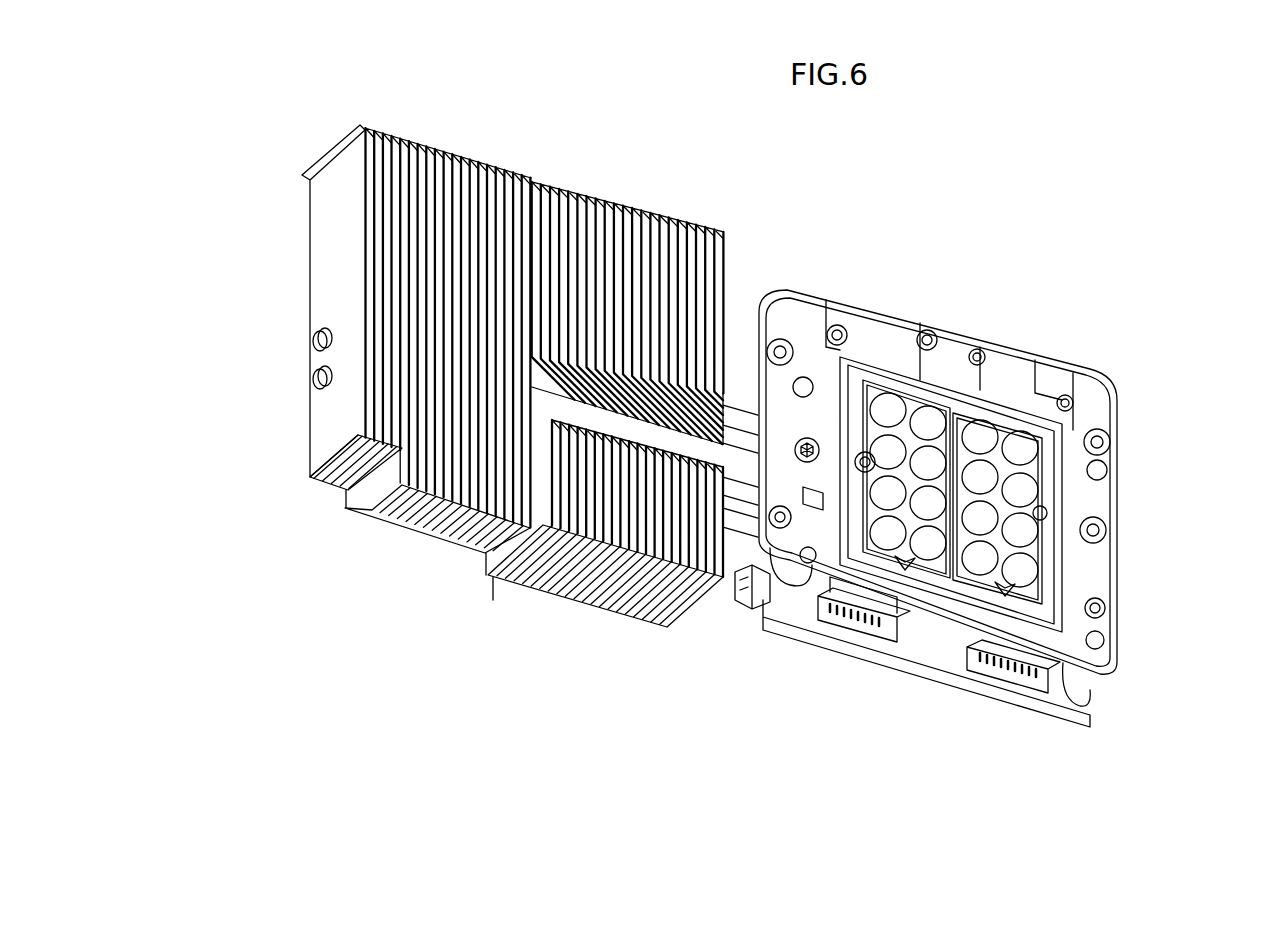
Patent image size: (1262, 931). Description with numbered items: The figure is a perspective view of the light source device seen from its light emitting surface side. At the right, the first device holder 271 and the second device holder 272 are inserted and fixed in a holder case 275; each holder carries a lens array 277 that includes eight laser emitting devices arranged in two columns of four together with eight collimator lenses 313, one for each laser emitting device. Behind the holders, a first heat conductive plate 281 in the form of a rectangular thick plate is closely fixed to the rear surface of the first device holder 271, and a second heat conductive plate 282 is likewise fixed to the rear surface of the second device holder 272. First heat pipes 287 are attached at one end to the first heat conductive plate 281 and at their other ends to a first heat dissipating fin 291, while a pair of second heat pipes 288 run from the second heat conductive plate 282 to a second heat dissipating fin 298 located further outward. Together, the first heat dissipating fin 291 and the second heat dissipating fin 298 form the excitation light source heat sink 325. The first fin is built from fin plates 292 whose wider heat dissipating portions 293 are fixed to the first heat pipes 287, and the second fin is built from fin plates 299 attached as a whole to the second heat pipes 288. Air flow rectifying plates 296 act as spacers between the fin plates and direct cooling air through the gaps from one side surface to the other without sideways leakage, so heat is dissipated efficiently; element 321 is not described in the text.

The first device holder 271 is at (1005, 590).
The second device holder 272 is at (903, 565).
The holder case 275 is at (1052, 563).
The lens array 277 is at (908, 393).
The first heat conductive plate 281 is at (992, 693).
The second heat conductive plate 282 is at (822, 648).
The first heat pipes 287 is at (743, 493).
The second heat pipes 288 is at (733, 460).
The first heat dissipating fin 291 is at (584, 627).
The fin plates 292 is at (545, 195).
The heat dissipating portions 293 is at (557, 387).
The air flow rectifying plates 296 is at (330, 160).
The second heat dissipating fin 298 is at (398, 571).
The fin plates 299 is at (316, 416).
The collimator lenses 313 is at (930, 418).
The wiring board 321 is at (880, 738).
The excitation light source heat sink 325 is at (464, 669).